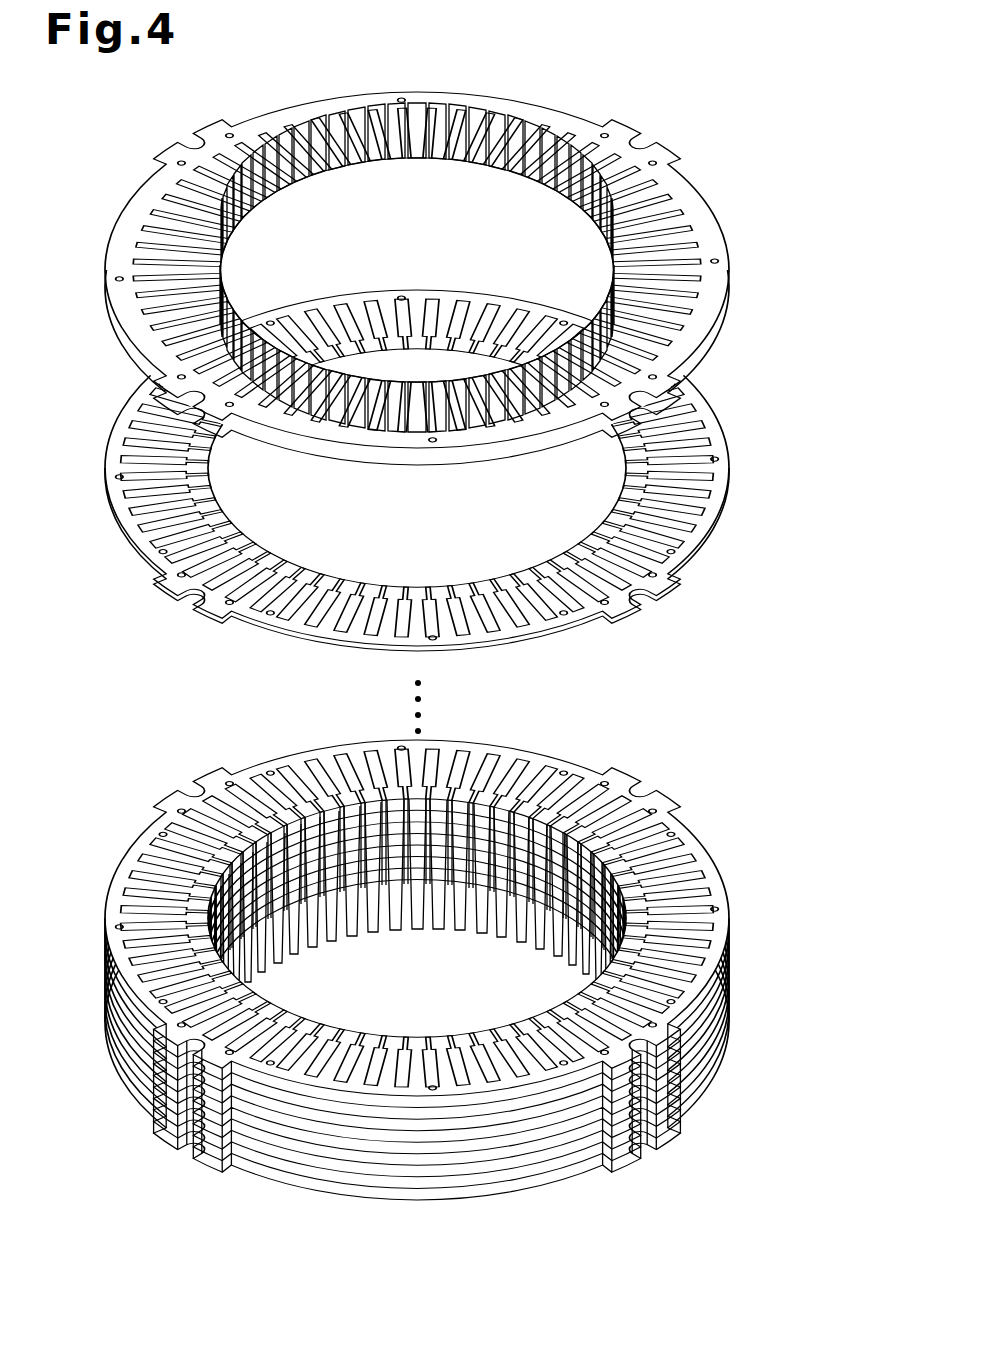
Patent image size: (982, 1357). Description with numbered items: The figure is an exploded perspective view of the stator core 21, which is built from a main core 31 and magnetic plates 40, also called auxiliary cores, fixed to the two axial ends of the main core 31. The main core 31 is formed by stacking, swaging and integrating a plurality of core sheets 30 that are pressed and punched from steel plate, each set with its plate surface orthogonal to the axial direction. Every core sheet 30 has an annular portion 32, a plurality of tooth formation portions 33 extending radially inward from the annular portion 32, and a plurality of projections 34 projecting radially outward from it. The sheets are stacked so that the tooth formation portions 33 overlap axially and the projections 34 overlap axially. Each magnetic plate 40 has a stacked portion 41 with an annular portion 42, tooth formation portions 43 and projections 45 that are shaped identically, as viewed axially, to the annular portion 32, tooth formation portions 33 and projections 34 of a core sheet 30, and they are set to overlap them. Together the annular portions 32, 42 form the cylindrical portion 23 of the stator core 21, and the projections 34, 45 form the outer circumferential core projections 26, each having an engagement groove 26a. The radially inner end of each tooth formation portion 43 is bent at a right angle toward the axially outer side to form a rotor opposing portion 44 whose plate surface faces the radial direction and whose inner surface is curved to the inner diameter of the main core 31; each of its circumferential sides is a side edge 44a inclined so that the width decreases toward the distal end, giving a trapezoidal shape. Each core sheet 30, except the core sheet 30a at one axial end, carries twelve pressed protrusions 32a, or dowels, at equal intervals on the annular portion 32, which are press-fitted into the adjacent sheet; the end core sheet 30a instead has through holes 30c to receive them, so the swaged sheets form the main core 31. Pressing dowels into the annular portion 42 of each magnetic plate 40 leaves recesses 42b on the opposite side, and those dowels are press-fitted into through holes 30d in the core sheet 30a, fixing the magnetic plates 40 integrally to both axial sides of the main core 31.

The stator core 21 is at (710, 100).
The cylindrical portion 23 is at (445, 1240).
The outer circumferential core projections 26 is at (102, 1112).
The engagement groove 26a is at (177, 142).
The core sheet 30 is at (712, 842).
The core sheet located at one axial end 30a is at (710, 400).
The through holes 30c is at (118, 560).
The through holes 30d is at (155, 600).
The main core 31 is at (765, 487).
The annular portion 32 is at (470, 640).
The protrusions 32a is at (258, 773).
The tooth formation portions 33 is at (390, 600).
The projections 34 is at (222, 622).
The magnetic plate 40 is at (722, 230).
The stacked portion 41 is at (298, 105).
The annular portion 42 is at (103, 262).
The recesses 42b is at (212, 138).
The tooth formation portions 43 is at (137, 241).
The rotor opposing portion 44 is at (362, 108).
The side edge 44a is at (518, 122).
The projections 45 is at (148, 160).